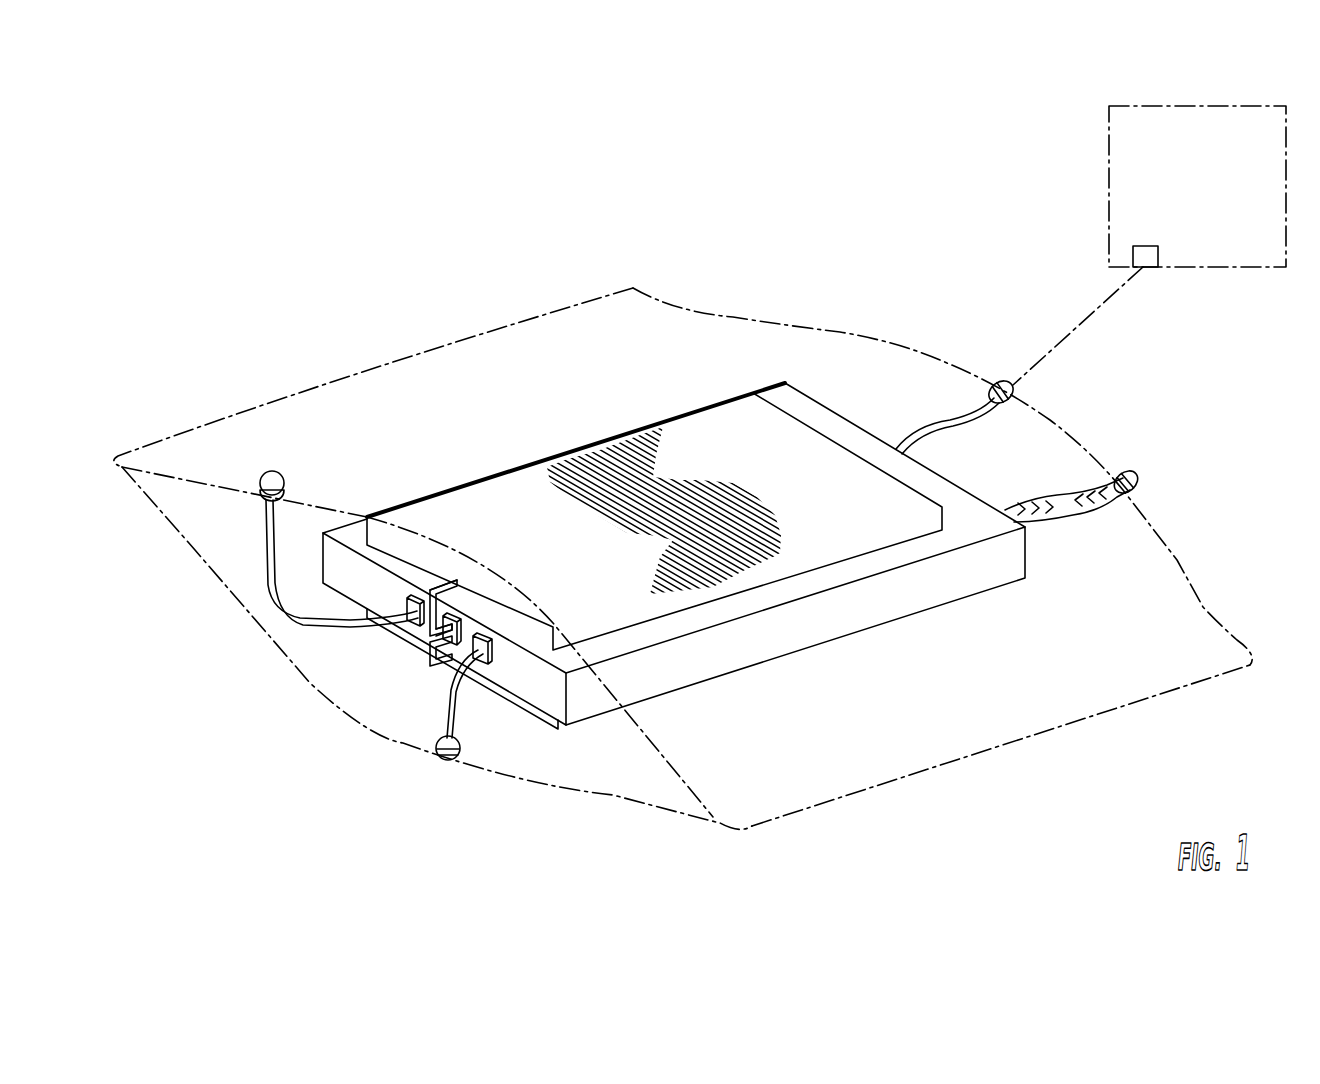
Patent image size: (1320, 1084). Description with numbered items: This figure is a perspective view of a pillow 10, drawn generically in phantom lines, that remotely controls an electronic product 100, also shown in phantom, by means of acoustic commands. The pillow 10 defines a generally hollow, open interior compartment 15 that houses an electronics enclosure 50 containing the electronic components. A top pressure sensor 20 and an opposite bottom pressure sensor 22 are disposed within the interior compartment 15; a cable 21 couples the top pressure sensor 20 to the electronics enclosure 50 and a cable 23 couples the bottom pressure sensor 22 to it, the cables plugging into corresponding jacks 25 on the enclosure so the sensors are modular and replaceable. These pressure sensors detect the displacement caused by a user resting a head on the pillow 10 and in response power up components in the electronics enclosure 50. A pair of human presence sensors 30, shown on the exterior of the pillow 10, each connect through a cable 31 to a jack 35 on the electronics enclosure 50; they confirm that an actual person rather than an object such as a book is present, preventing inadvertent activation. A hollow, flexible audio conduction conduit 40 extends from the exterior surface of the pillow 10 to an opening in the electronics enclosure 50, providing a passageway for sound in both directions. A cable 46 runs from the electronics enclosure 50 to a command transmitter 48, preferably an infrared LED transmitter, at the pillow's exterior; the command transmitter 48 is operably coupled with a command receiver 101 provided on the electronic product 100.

The pillow 10 is at (400, 358).
The interior compartment 15 is at (647, 775).
The top pressure sensor 20 is at (735, 425).
The cable 21 is at (453, 582).
The bottom pressure sensor 22 is at (526, 705).
The cable 23 is at (435, 666).
The jack 25 is at (453, 618).
The human presence sensor 30 is at (271, 472).
The cable 31 is at (290, 606).
The jack 35 is at (417, 618).
The audio conduction conduit 40 is at (1072, 520).
The cable 46 is at (938, 422).
The command transmitter 48 is at (1000, 380).
The electronics enclosure 50 is at (862, 620).
The electronic product 100 is at (1216, 199).
The command receiver 101 is at (1145, 245).